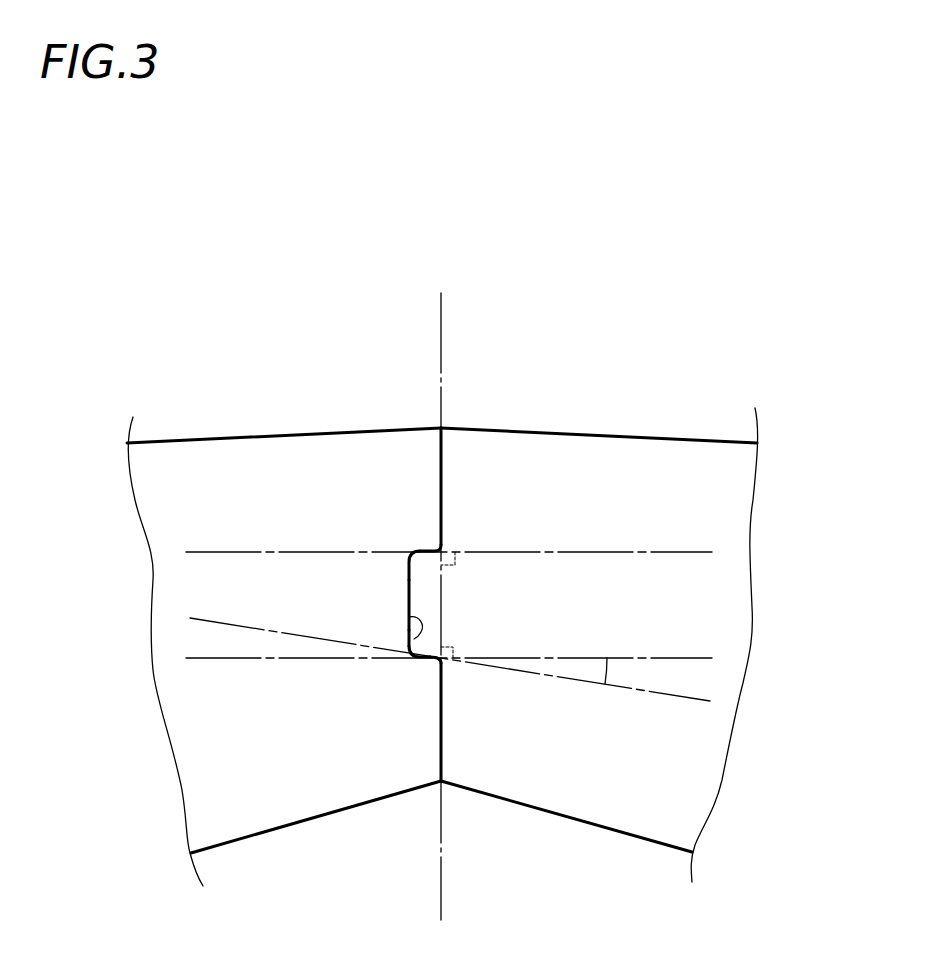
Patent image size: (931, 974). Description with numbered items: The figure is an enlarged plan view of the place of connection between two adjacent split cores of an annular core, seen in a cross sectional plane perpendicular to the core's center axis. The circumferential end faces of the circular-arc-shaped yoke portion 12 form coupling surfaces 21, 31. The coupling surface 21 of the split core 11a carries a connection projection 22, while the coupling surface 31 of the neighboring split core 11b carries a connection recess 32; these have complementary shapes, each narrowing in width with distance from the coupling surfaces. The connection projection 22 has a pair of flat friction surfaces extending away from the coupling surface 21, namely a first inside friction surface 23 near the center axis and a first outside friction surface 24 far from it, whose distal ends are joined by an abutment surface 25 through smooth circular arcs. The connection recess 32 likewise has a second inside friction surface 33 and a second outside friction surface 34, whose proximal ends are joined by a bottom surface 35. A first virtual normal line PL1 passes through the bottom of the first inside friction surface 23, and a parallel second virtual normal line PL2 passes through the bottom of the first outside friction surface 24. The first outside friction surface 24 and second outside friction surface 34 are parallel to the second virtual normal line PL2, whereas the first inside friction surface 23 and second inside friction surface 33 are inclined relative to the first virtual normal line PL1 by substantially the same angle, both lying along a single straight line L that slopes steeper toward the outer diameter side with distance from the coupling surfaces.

The split core 11a is at (623, 404).
The split core 11b is at (283, 419).
The yoke portion 12 is at (198, 447).
The coupling surface 21 is at (440, 445).
The connection projection 22 is at (406, 577).
The first inside friction surface 23 is at (414, 658).
The first outside friction surface 24 is at (426, 547).
The abutment surface 25 is at (407, 596).
The coupling surface 31 is at (443, 472).
The connection recess 32 is at (406, 636).
The second inside friction surface 33 is at (430, 656).
The second outside friction surface 34 is at (413, 557).
The bottom surface 35 is at (410, 590).
The first virtual normal line PL1 is at (220, 660).
The second virtual normal line PL2 is at (219, 551).
The straight line L is at (232, 624).